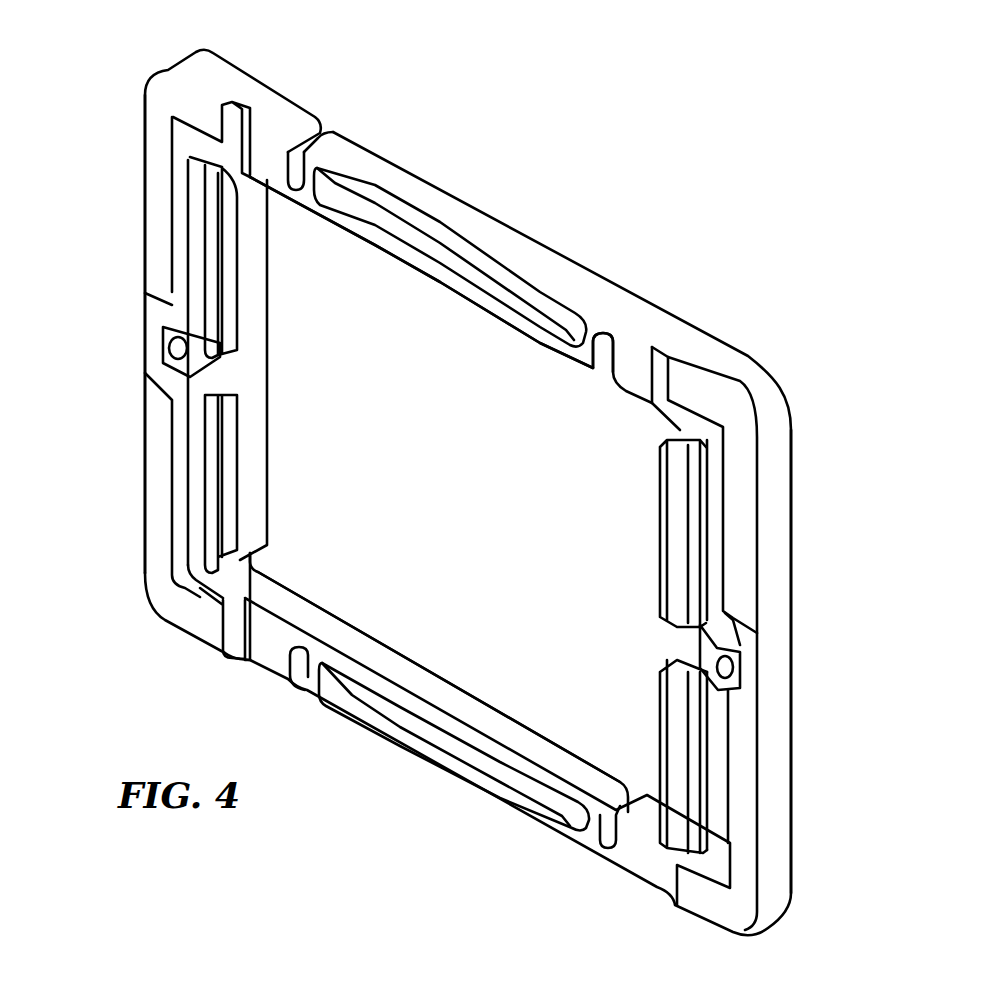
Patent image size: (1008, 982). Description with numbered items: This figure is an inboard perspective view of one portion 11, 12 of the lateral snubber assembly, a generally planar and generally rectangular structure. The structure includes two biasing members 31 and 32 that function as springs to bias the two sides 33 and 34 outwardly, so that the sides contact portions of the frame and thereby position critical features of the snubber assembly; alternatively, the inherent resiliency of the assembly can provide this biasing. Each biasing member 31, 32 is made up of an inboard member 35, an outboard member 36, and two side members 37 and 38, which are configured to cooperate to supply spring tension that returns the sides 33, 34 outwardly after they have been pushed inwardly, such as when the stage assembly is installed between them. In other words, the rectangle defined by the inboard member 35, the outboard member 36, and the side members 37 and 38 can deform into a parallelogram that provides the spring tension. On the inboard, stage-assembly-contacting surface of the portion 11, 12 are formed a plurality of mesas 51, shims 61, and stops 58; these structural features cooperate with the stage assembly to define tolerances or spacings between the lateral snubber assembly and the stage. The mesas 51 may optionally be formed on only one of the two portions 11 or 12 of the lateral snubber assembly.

The portion of lateral snubber assembly 11 is at (100, 479).
The portion of lateral snubber assembly 12 is at (704, 638).
The biasing member 31 is at (590, 200).
The biasing member 32 is at (542, 848).
The side 33 is at (790, 680).
The side 34 is at (152, 232).
The inboard member 35 is at (458, 281).
The outboard member 36 is at (428, 198).
The side member 37 is at (597, 343).
The side member 38 is at (298, 176).
The mesa 51 is at (200, 307).
The stop 58 is at (237, 396).
The shim 61 is at (178, 197).